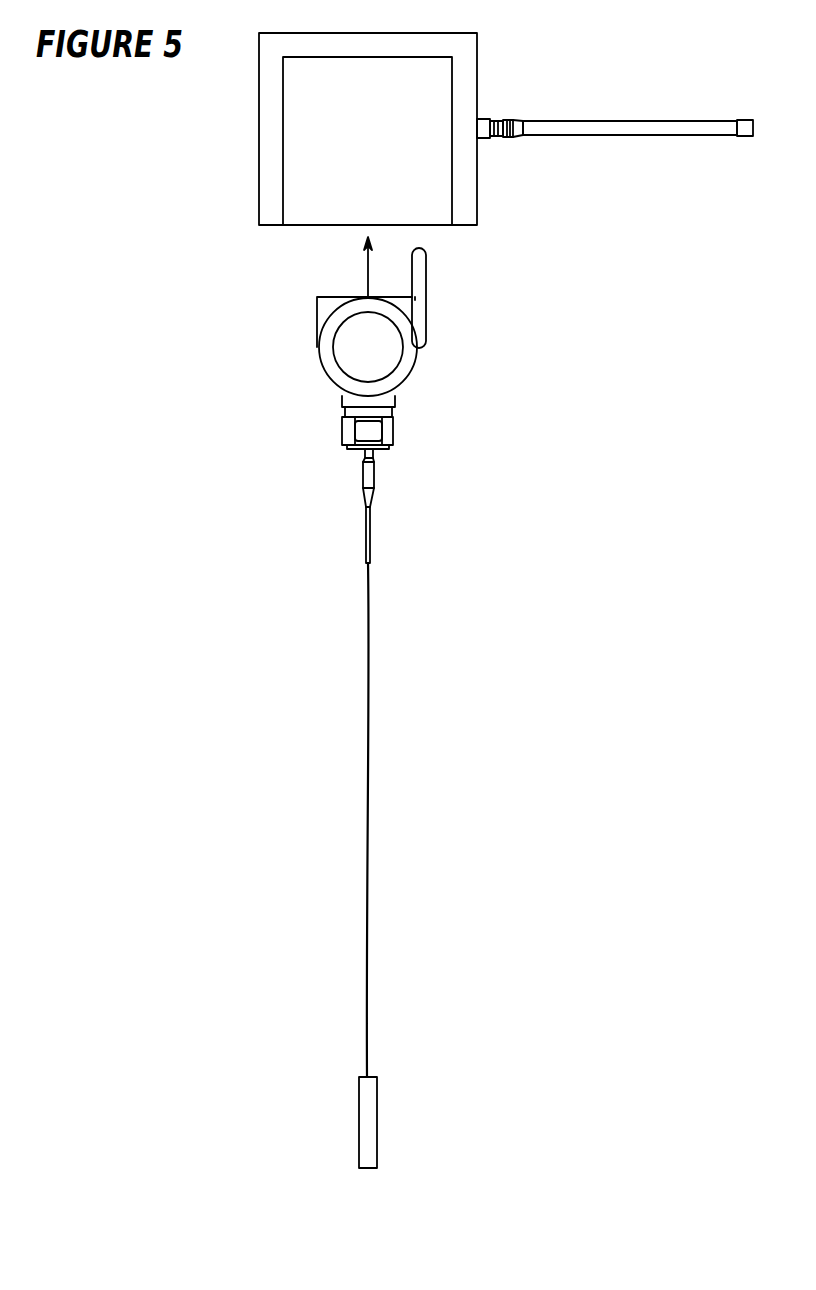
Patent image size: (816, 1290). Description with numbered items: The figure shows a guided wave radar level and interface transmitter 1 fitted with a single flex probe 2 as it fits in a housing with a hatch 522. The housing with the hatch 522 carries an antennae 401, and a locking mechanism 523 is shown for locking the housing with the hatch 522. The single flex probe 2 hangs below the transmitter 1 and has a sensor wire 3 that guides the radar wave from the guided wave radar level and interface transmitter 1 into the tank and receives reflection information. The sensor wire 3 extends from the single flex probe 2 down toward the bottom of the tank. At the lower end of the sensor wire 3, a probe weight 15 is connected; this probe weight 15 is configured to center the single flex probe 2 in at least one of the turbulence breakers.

The guided wave radar level and interface transmitter 1 is at (319, 345).
The single flex probe 2 is at (393, 431).
The sensor wire 3 is at (367, 795).
The probe weight 15 is at (377, 1121).
The antennae 401 is at (636, 119).
The housing with the hatch 522 is at (283, 95).
The locking mechanism 523 is at (477, 53).